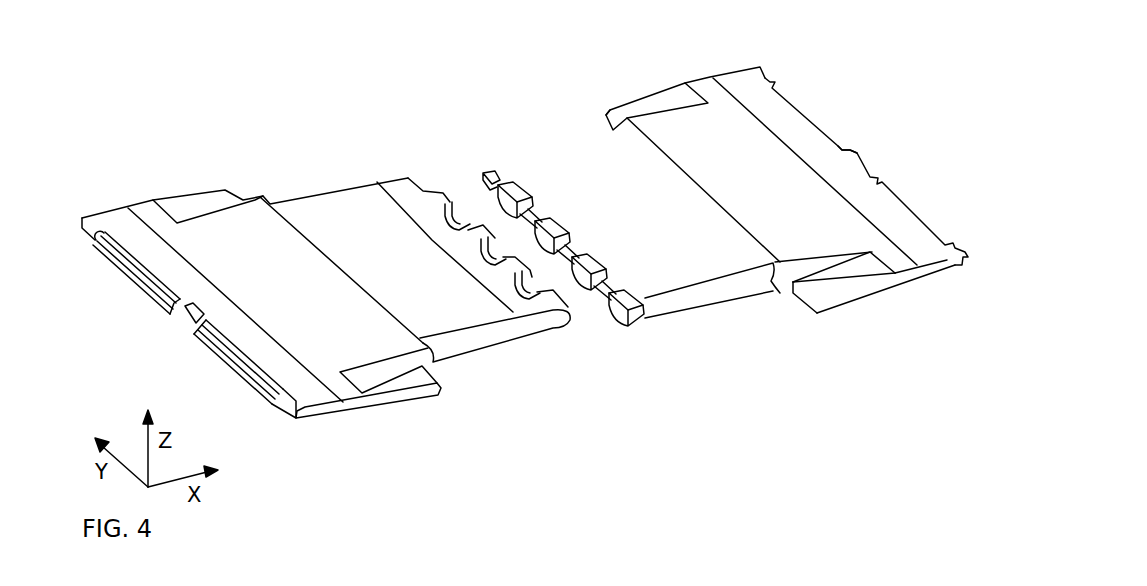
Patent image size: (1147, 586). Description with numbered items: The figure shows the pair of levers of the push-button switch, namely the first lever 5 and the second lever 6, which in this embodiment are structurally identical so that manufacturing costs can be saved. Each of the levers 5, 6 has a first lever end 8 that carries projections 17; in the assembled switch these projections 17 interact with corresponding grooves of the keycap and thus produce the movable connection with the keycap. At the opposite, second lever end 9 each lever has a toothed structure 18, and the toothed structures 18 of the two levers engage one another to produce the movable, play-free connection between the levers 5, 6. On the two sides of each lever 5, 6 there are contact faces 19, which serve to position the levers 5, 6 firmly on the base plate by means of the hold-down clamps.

The first lever 5 is at (247, 213).
The second lever 6 is at (678, 118).
The first lever end 8 is at (305, 408).
The second lever end 9 is at (544, 312).
The projections 17 is at (236, 370).
The toothed structure 18 is at (450, 197).
The contact faces 19 is at (227, 193).